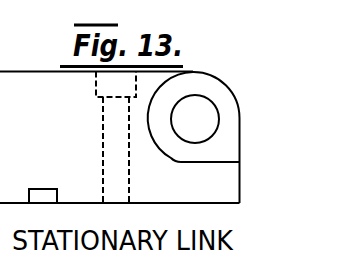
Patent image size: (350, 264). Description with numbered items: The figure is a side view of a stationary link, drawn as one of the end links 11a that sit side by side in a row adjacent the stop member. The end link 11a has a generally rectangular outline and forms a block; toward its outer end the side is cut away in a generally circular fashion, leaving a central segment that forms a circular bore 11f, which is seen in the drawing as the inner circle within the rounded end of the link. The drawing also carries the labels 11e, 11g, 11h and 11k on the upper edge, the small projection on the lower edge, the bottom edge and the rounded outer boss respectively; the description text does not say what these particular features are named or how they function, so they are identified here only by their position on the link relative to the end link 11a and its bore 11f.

The end link 11a is at (198, 59).
The top edge surface of stationary link 11e is at (52, 70).
The circular bore 11f is at (210, 133).
The stop projection 11g is at (55, 187).
The bottom edge of stationary link 11h is at (157, 203).
The cylindrical boss 11k is at (212, 77).